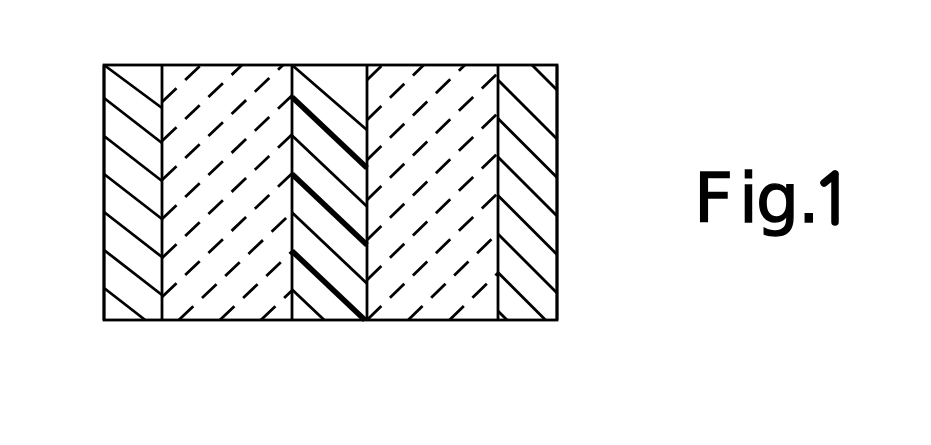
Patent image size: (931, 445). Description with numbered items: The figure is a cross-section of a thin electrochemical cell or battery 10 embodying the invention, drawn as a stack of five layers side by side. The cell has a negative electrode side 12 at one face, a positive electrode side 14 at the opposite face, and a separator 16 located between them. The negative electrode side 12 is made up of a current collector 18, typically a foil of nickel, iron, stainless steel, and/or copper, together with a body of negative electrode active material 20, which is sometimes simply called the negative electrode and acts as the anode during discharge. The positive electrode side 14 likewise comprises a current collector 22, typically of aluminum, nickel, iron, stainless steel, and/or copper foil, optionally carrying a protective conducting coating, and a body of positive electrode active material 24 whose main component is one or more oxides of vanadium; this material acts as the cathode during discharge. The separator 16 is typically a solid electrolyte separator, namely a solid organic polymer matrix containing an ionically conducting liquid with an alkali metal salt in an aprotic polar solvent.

The electrochemical cell or battery 10 is at (332, 345).
The negative electrode side 12 is at (95, 186).
The positive electrode side 14 is at (570, 187).
The separator 16 is at (332, 65).
The current collector 18 is at (143, 306).
The negative electrode active material 20 is at (244, 308).
The current collector 22 is at (525, 308).
The positive electrode active material 24 is at (392, 310).